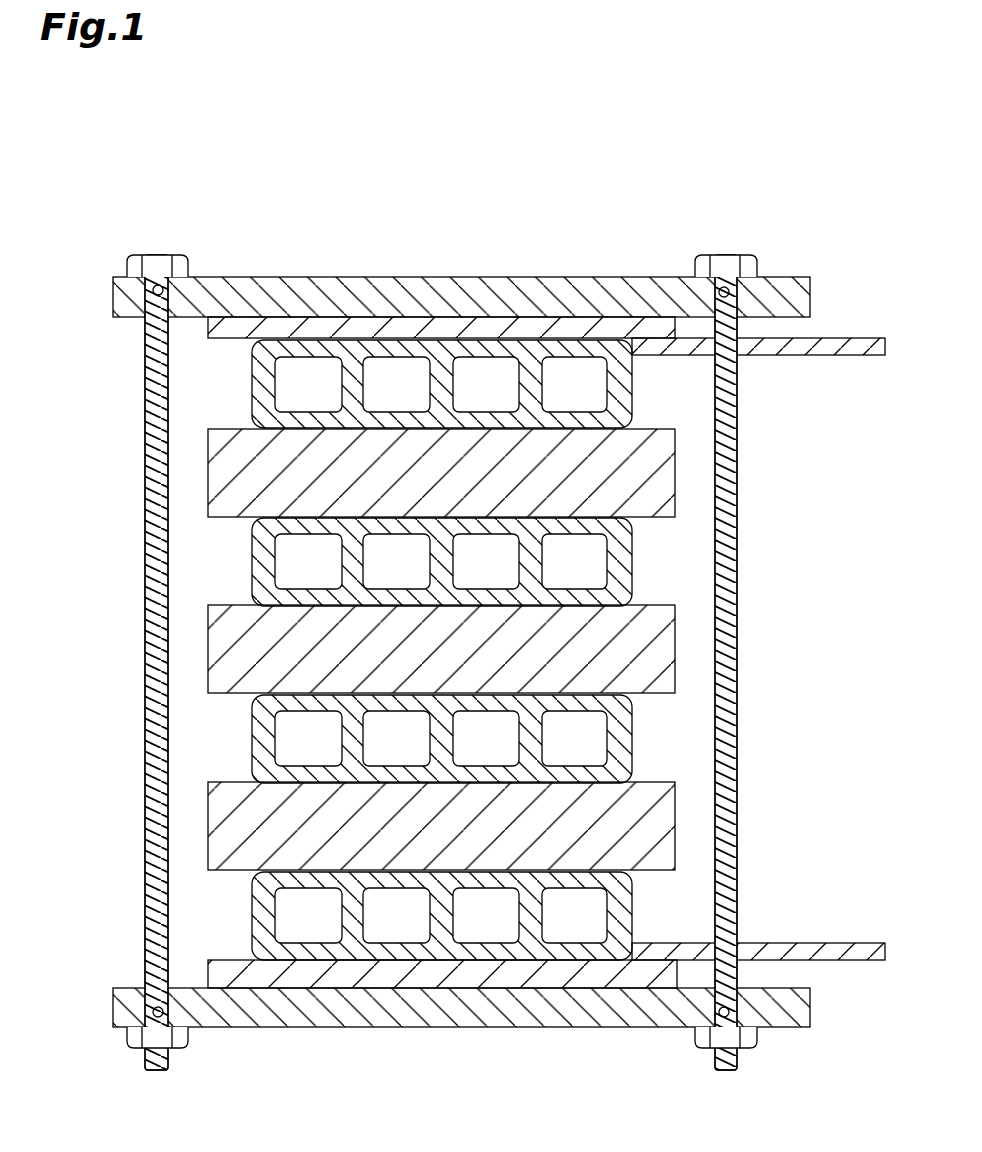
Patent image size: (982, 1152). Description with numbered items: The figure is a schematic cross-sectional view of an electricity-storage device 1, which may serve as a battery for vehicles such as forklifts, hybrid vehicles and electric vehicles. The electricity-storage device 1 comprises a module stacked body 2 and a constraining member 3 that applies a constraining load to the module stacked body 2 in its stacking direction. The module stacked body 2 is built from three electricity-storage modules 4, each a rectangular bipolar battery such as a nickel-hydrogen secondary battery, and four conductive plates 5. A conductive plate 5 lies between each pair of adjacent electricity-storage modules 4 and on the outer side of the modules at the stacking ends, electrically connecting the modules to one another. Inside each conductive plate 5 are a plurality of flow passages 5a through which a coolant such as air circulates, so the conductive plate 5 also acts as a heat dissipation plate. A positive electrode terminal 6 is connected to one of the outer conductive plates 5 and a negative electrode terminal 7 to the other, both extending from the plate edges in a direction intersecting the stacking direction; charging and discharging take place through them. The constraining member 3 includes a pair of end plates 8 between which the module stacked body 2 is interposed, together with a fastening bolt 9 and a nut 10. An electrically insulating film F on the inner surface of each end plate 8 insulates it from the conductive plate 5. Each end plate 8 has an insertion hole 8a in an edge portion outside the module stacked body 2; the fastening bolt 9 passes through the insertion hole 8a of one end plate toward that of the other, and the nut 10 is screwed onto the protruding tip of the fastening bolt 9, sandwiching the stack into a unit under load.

The electricity-storage device 1 is at (483, 615).
The module stacked body 2 is at (440, 652).
The constraining member 3 is at (477, 665).
The electricity-storage module 4 is at (675, 475).
The conductive plate 5 is at (490, 650).
The flow passage 5a is at (284, 385).
The positive electrode terminal 6 is at (852, 942).
The negative electrode terminal 7 is at (852, 358).
The end plate 8 is at (469, 287).
The insertion hole 8a is at (161, 288).
The fastening bolt 9 is at (147, 628).
The nut 10 is at (134, 1050).
The film F is at (212, 327).